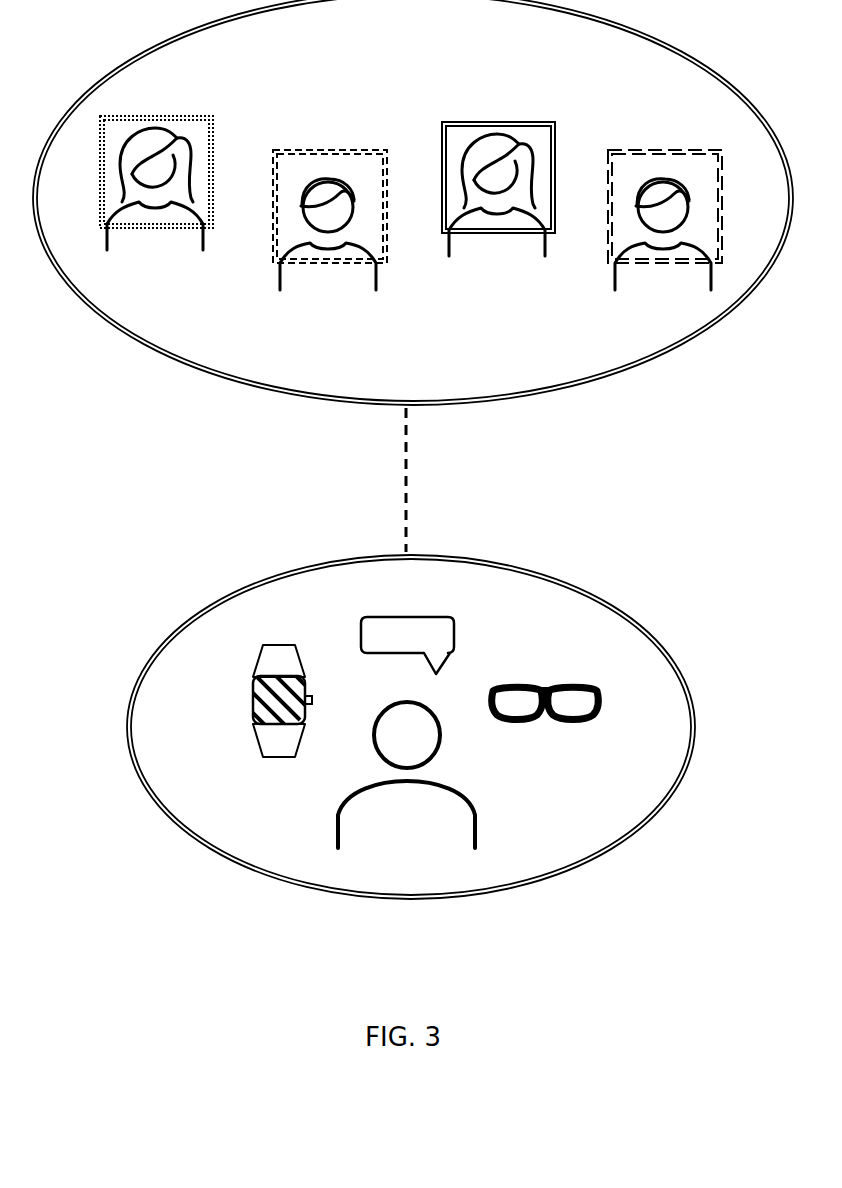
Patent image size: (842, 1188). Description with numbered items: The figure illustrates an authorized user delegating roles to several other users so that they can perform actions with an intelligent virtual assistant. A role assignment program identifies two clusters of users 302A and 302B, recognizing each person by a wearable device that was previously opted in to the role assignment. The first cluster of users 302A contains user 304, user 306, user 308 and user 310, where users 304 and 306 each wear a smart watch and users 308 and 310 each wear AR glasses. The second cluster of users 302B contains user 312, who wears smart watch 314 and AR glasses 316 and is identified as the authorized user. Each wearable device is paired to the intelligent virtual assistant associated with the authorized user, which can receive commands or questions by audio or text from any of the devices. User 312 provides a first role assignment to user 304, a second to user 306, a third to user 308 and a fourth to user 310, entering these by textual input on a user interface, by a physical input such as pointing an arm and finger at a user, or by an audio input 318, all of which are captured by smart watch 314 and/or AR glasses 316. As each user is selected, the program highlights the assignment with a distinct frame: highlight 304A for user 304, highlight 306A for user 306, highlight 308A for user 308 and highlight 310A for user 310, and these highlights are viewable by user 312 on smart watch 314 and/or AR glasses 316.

The cluster of users 302A is at (85, 93).
The cluster of users 302B is at (162, 643).
The user 304 is at (137, 271).
The frame (highlight) 304A is at (173, 115).
The user 306 is at (312, 306).
The frame (highlight) 306A is at (332, 150).
The user 308 is at (480, 277).
The frame (highlight) 308A is at (498, 122).
The user 310 is at (645, 304).
The frame (highlight) 310A is at (638, 150).
The user 312 is at (389, 839).
The smart watch 314 is at (253, 702).
The AR glasses 316 is at (600, 702).
The audio input 318 is at (454, 636).